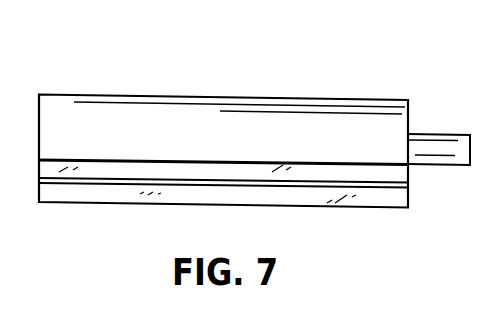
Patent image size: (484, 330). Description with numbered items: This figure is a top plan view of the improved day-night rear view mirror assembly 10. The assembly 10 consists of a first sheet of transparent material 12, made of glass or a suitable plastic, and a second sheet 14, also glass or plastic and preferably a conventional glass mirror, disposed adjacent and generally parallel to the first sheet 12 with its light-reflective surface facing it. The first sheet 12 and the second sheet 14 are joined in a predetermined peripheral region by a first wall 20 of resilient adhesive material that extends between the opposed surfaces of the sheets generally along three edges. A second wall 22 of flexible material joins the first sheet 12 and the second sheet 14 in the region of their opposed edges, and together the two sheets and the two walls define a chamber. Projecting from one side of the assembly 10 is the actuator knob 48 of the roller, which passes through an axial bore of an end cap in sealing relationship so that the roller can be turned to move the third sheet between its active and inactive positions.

The day-night rear view mirror assembly 10 is at (323, 65).
The first sheet of transparent material 12 is at (358, 192).
The second sheet 14 is at (377, 172).
The first wall 20 is at (113, 182).
The second wall 22 is at (178, 142).
The actuator knob 48 is at (438, 146).